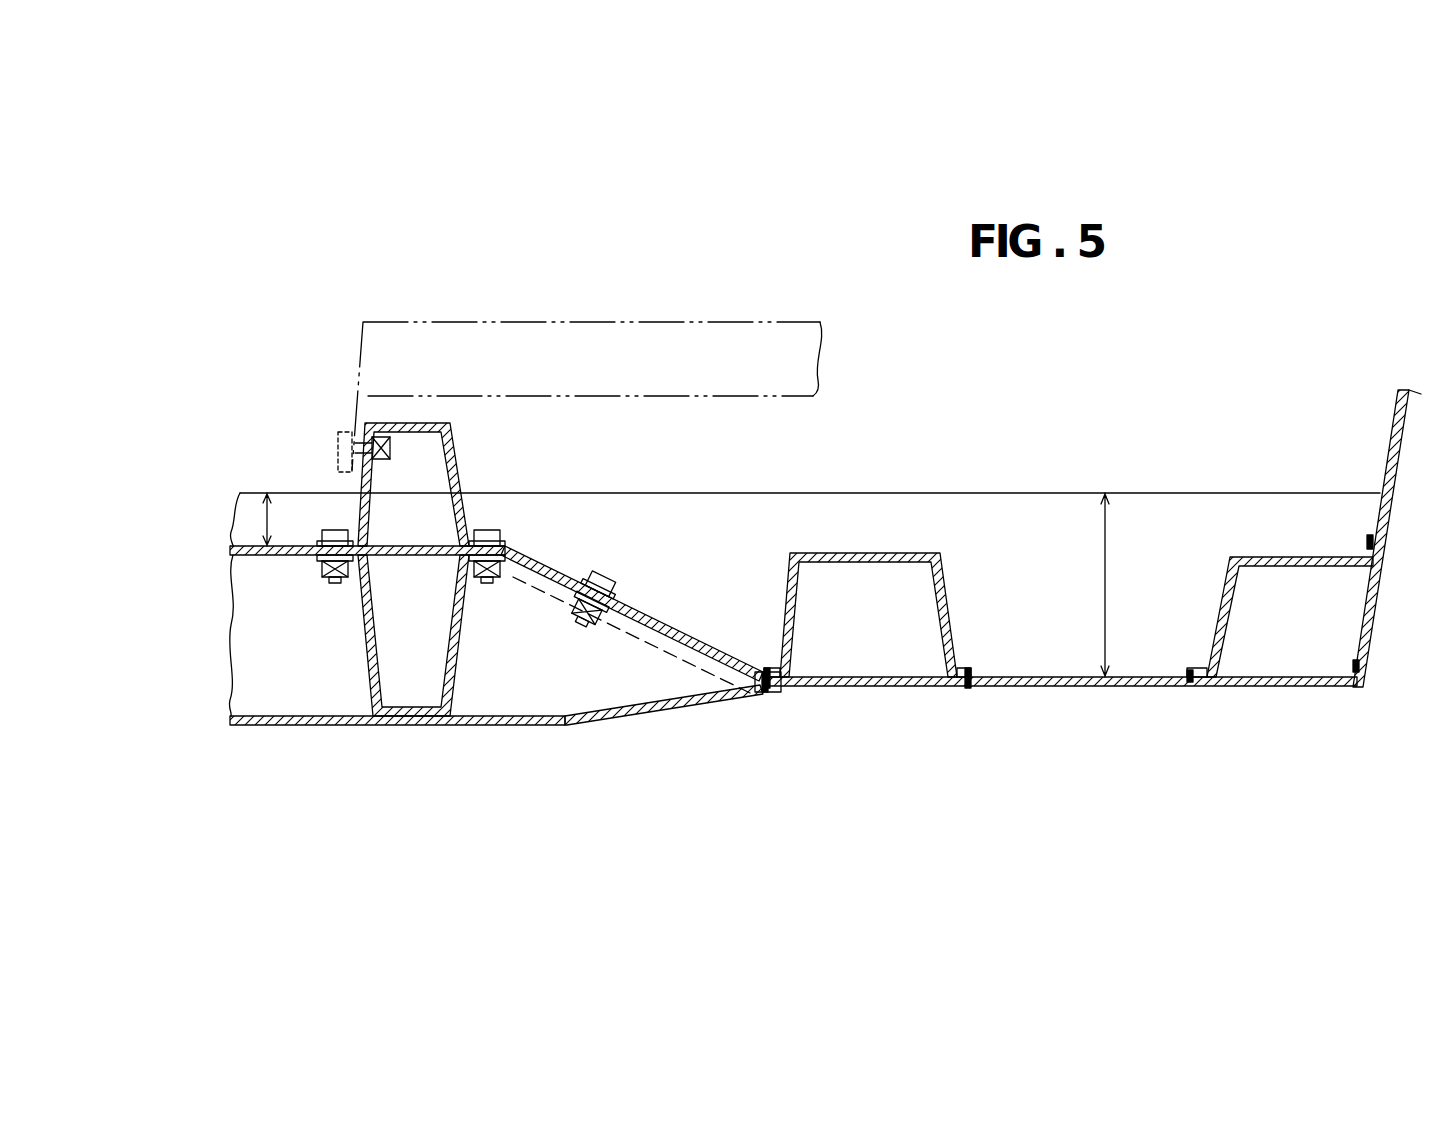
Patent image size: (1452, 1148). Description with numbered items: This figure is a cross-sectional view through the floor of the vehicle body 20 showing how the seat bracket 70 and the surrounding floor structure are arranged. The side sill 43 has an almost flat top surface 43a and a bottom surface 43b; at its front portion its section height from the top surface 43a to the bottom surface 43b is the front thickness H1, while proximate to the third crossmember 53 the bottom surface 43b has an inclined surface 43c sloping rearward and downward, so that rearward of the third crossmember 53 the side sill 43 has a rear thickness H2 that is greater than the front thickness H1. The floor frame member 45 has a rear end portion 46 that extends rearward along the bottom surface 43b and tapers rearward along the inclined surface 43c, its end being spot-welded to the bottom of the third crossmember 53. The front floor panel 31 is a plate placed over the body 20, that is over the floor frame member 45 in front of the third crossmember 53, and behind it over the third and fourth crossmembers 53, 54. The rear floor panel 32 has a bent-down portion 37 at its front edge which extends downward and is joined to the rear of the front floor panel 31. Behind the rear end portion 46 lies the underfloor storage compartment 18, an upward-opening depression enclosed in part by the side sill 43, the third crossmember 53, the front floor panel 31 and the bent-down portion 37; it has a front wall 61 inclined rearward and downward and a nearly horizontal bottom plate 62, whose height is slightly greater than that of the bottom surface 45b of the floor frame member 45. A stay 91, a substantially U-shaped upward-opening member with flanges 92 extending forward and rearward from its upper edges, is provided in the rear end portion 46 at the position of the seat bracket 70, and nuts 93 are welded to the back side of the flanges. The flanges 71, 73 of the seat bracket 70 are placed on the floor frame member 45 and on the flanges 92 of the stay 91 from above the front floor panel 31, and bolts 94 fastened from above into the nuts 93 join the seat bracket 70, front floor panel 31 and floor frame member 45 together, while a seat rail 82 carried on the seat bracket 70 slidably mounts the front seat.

The body 20 is at (318, 279).
The seat bracket 70 is at (420, 425).
The seat rail 82 is at (686, 322).
The flange 71 is at (318, 557).
The bolt 94 is at (333, 530).
The flange 73 is at (540, 562).
The inclined surface 43c is at (633, 627).
The side sill 43 is at (789, 516).
The top surface 43a is at (870, 493).
The bottom surface 43b is at (240, 552).
The third crossmember 53 is at (910, 553).
The underfloor storage compartment 18 is at (1035, 598).
The fourth crossmember 54 is at (1253, 557).
The rear floor panel 32 is at (1387, 388).
The bent-down portion 37 is at (1382, 443).
The floor frame member 45 is at (249, 608).
The bottom surface 45b is at (255, 725).
The flange 92 is at (310, 560).
The nut 93 is at (335, 586).
The stay 91 is at (366, 701).
The rear end portion 46 is at (651, 690).
The front wall 61 is at (699, 655).
The bottom plate 62 is at (1037, 687).
The front floor panel 31 is at (1148, 702).
The front thickness H1 is at (262, 525).
The rear thickness H2 is at (1128, 585).